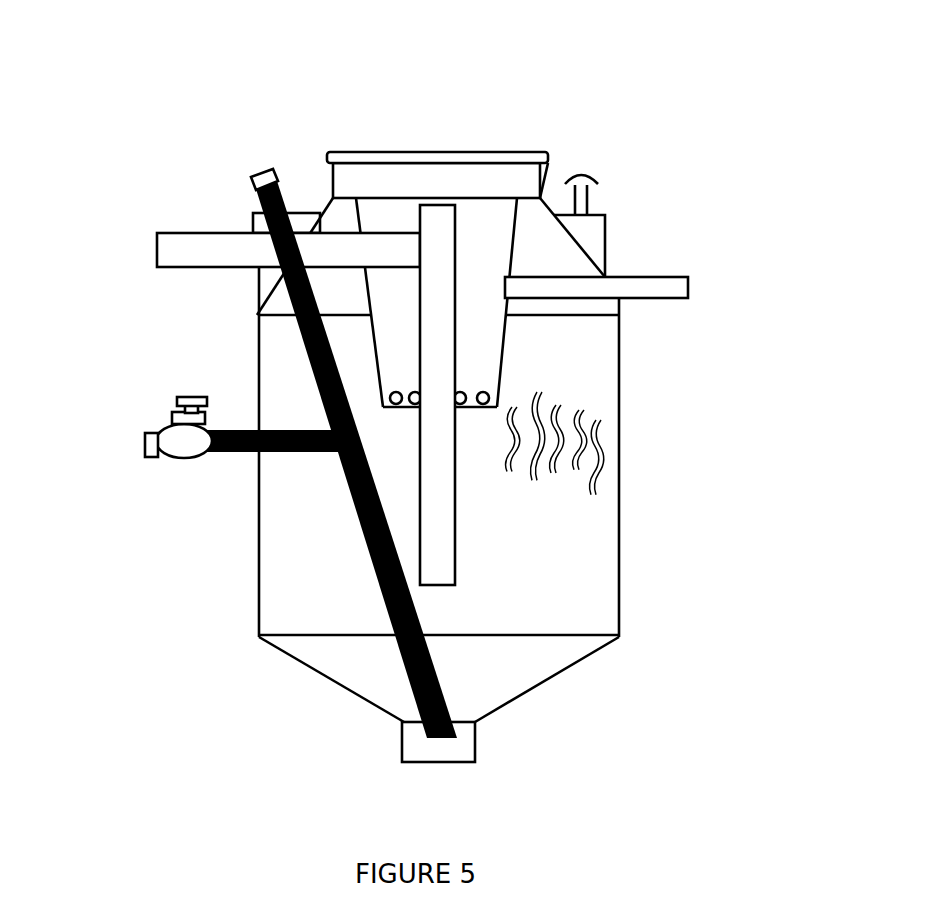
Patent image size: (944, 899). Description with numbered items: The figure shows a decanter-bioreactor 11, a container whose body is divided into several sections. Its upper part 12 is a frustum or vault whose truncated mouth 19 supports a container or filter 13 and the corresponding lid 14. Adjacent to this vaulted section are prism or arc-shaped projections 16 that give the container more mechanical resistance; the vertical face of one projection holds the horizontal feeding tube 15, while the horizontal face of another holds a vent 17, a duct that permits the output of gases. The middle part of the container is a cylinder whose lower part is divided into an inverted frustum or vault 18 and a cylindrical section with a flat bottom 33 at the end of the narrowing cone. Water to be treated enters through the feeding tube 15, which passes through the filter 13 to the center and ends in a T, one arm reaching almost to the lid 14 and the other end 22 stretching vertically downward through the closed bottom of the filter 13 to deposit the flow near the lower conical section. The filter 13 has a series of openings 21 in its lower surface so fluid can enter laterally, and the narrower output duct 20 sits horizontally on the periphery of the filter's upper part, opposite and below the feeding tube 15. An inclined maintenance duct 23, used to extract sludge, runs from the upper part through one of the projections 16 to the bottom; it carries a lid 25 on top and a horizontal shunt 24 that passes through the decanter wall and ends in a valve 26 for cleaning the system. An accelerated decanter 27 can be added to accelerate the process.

The decanter-bioreactor 11 is at (627, 425).
The upper part 12 is at (322, 207).
The container or filter 13 is at (513, 377).
The lid 14 is at (430, 150).
The feeding tube 15 is at (153, 253).
The projections 16 is at (615, 253).
The vent 17 is at (600, 203).
The inverted frustum or vault 18 is at (570, 677).
The mouth 19 is at (552, 178).
The output duct 20 is at (700, 307).
The openings 21 is at (337, 455).
The vertical section 22 is at (458, 545).
The inclined duct 23 is at (407, 700).
The horizontal shunt 24 is at (275, 425).
The lid 25 is at (250, 177).
The valve 26 is at (168, 465).
The accelerated decanter 27 is at (612, 468).
The flat bottom 33 is at (478, 746).